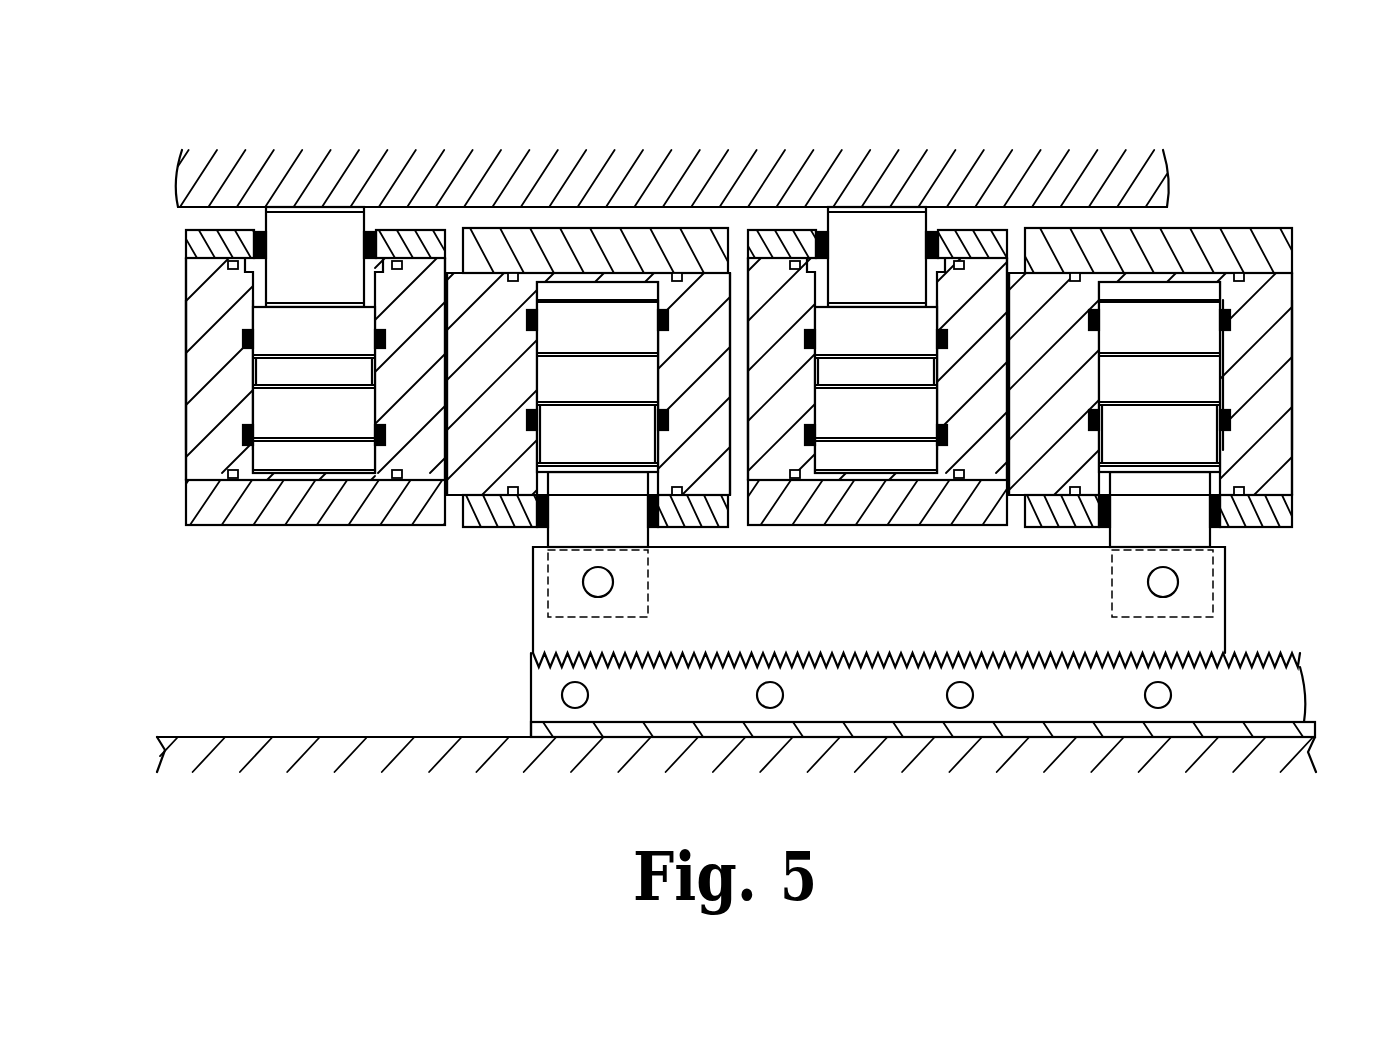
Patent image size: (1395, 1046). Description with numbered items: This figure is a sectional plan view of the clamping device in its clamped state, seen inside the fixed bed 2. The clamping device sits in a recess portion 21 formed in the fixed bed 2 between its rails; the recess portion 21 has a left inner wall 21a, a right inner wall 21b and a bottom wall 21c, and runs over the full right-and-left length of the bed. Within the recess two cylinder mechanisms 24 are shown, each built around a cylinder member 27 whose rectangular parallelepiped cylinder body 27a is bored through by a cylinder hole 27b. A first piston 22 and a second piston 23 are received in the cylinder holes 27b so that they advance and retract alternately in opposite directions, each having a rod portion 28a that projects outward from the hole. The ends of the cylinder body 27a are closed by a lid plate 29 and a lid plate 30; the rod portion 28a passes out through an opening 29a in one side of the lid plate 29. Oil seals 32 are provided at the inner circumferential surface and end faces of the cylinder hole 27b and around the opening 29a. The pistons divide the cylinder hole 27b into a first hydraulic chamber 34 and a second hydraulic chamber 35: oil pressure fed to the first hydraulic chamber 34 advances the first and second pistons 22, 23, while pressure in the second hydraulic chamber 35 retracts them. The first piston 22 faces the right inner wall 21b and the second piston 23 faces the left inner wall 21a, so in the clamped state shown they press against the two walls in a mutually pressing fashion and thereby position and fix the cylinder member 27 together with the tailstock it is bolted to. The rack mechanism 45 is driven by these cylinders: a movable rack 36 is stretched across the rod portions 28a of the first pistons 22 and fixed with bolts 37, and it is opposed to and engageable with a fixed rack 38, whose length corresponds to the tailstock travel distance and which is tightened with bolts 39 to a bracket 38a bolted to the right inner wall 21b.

The fixed bed 2 is at (1168, 172).
The recess portion 21 is at (243, 715).
The left inner wall 21a is at (505, 212).
The right inner wall 21b is at (410, 725).
The bottom wall 21c is at (352, 700).
The first piston 22 is at (640, 285).
The second piston 23 is at (310, 430).
The cylinder mechanism 24 is at (464, 555).
The cylinder member 27 is at (184, 338).
The cylinder body 27a is at (184, 450).
The cylinder hole 27b is at (250, 450).
The rod portion 28a is at (258, 238).
The lid plate 29 is at (393, 235).
The opening 29a is at (830, 215).
The lid plate 30 is at (358, 525).
The oil seal 32 is at (233, 262).
The first hydraulic chamber 34 is at (340, 465).
The second hydraulic chamber 35 is at (368, 292).
The movable rack 36 is at (1230, 605).
The bolt 37 is at (613, 583).
The fixed rack 38 is at (1300, 662).
The bracket 38a is at (905, 732).
The bolt 39 is at (575, 708).
The rack mechanism 45 is at (1326, 600).